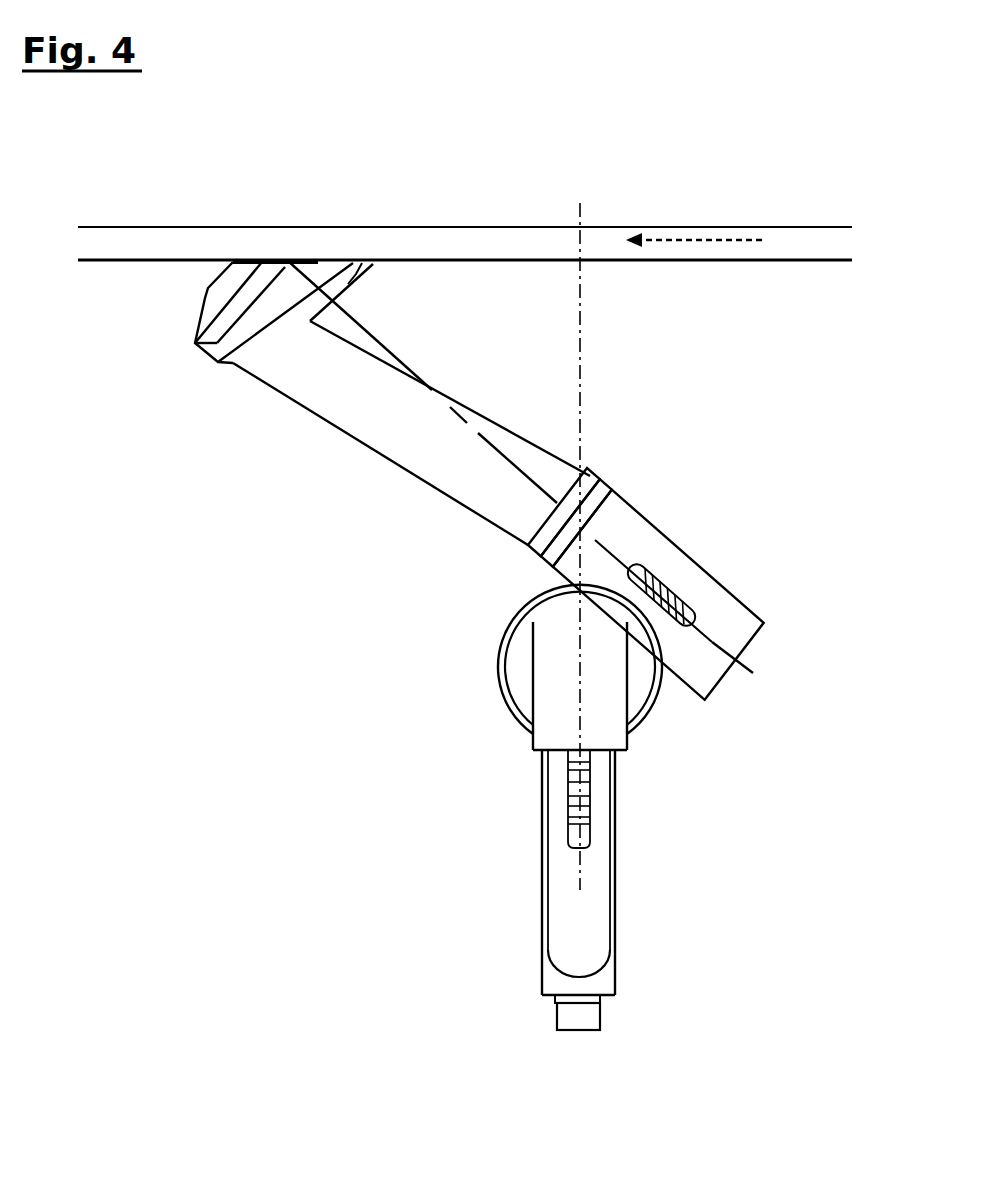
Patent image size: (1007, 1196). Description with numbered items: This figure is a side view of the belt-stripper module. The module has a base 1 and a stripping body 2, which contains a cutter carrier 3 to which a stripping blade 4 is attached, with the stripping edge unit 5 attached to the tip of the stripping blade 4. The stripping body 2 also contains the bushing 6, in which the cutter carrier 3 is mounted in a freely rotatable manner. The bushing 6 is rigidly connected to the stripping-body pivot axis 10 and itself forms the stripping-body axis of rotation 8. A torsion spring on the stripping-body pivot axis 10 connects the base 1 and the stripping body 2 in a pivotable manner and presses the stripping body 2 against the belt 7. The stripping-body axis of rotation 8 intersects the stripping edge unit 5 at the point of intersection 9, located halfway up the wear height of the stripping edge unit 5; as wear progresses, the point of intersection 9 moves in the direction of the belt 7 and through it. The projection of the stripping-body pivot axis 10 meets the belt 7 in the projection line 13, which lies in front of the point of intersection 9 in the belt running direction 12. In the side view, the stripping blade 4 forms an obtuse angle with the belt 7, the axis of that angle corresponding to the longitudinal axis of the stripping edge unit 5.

The base 1 is at (583, 902).
The stripping body 2 is at (533, 453).
The cutter carrier 3 is at (440, 445).
The stripping blade 4 is at (280, 298).
The stripping edge unit 5 is at (372, 270).
The bushing 6 is at (670, 560).
The belt 7 is at (408, 242).
The stripping-body axis of rotation 8 is at (748, 678).
The point of intersection 9 is at (280, 258).
The stripping-body pivot axis 10 is at (593, 668).
The belt running direction 12 is at (700, 240).
The projection line 13 is at (587, 242).